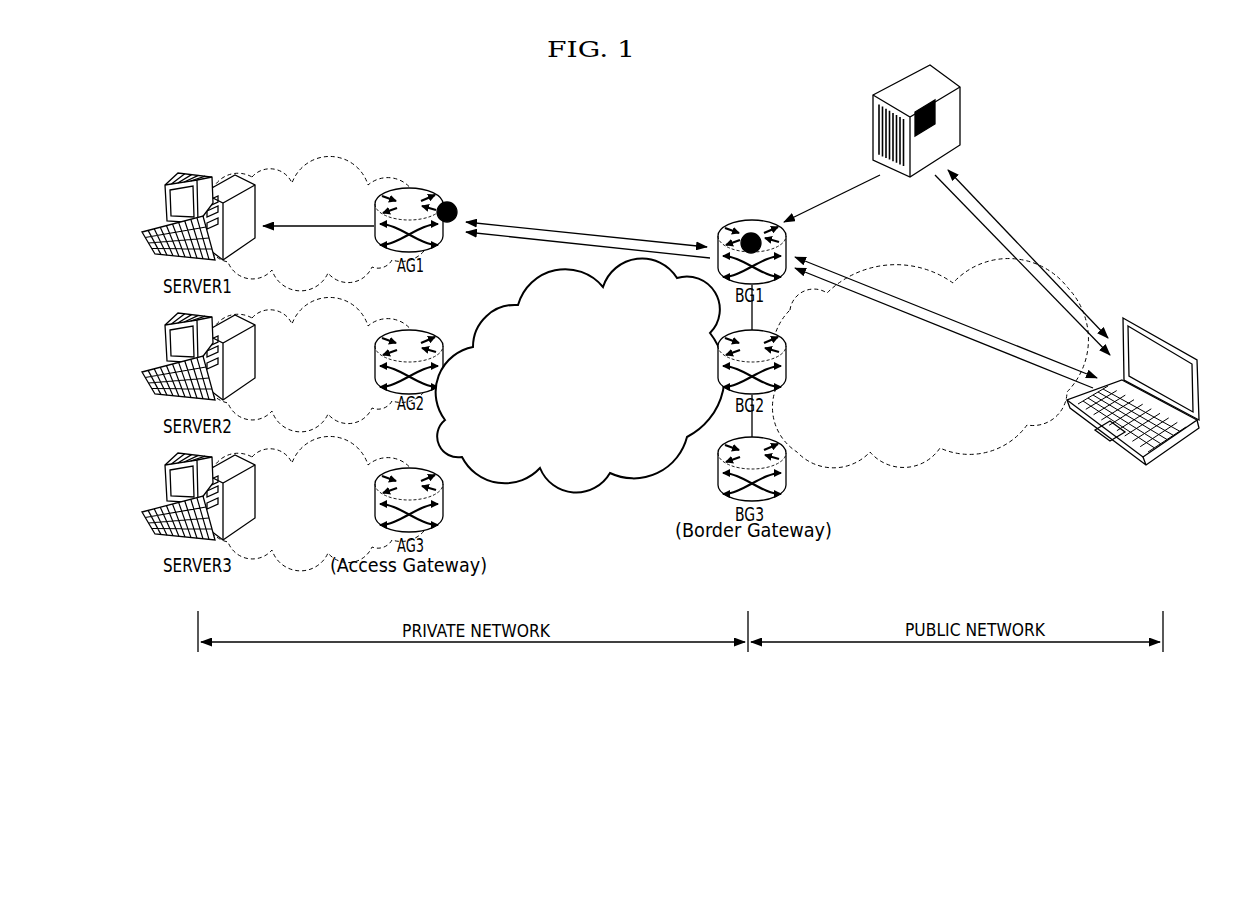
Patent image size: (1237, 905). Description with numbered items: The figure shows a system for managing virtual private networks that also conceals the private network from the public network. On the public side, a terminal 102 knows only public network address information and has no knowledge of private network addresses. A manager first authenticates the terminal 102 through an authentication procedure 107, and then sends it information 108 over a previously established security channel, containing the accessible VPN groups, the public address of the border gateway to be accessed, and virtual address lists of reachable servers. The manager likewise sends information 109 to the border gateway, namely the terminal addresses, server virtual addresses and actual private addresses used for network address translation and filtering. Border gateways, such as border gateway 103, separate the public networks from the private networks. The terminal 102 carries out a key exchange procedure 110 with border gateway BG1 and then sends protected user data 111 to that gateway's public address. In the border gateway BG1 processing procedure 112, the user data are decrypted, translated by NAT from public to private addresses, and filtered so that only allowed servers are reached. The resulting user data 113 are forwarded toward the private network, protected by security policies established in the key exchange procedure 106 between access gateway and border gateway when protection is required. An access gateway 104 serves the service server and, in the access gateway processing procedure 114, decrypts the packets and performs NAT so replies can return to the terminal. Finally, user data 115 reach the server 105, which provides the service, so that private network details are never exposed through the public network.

The terminal 102 is at (1152, 335).
The border gateway 103 is at (787, 478).
The access gateway 104 is at (418, 332).
The server 105 is at (232, 177).
The key exchange procedure 106 is at (574, 232).
The authentication procedure 107 is at (996, 218).
The information transferred to terminal 108 is at (966, 208).
The information transferred to border gateway 109 is at (845, 196).
The key exchange procedure between terminal and border gateway 110 is at (967, 323).
The user data from terminal 111 is at (990, 347).
The border gateway BG1 processing procedure 112 is at (752, 233).
The user data from border gateway 113 is at (523, 244).
The access gateway processing procedure 114 is at (451, 203).
The user data to service server 115 is at (308, 225).